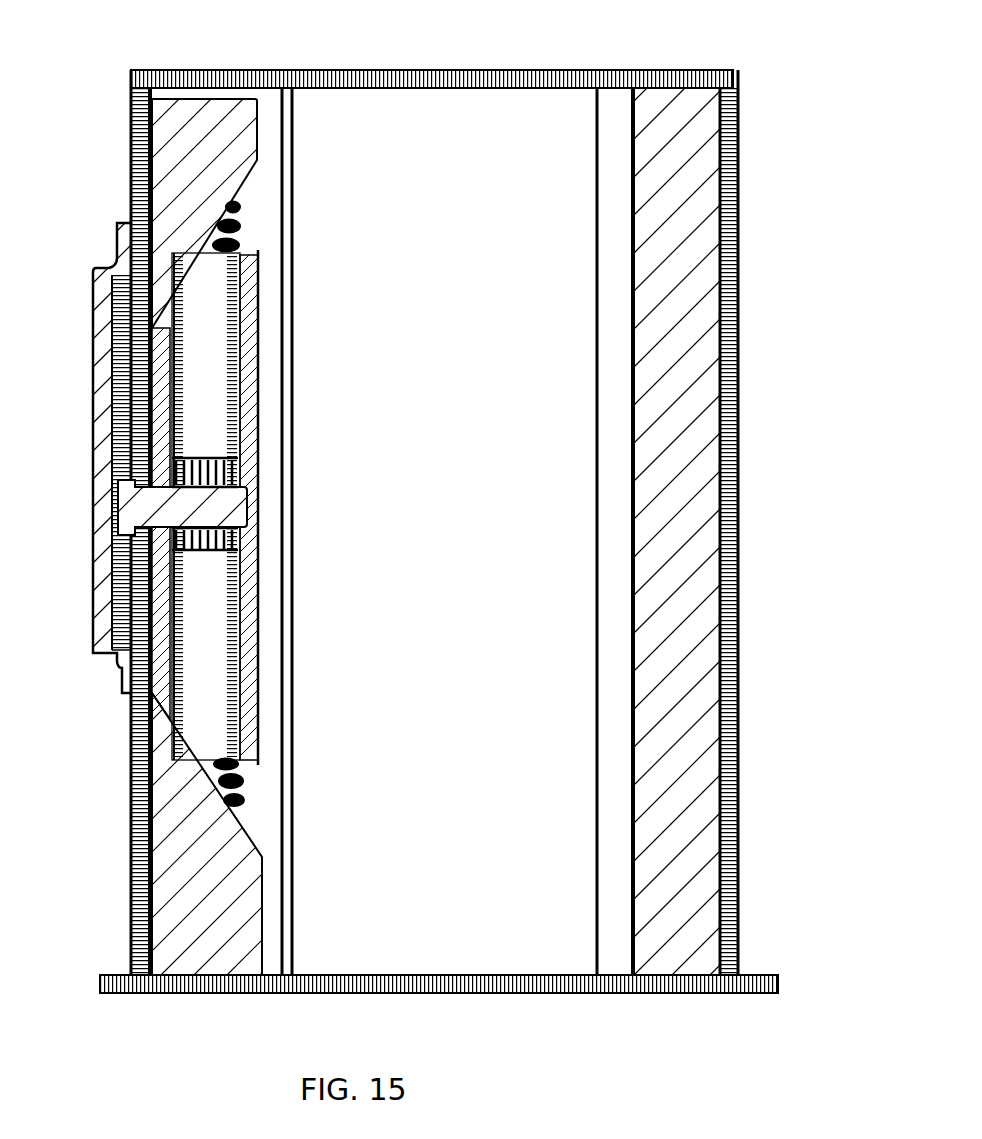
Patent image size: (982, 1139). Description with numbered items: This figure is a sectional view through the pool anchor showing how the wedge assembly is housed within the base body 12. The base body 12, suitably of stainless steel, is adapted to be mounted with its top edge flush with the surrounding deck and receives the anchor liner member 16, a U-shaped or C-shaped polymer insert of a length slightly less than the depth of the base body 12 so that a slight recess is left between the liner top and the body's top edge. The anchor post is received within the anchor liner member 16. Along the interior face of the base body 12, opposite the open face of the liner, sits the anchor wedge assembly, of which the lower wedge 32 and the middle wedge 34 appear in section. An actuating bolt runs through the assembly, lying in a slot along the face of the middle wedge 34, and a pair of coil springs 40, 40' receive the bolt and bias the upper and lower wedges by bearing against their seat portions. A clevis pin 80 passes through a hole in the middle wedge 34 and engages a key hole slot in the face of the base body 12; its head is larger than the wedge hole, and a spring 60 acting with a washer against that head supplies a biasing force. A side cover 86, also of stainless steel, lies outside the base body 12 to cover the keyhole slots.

The base body 12 is at (735, 882).
The anchor liner member 16 is at (682, 668).
The lower wedge 32 is at (207, 148).
The middle wedge 34 is at (162, 382).
The coil spring 40 is at (279, 175).
The coil spring 40' is at (165, 808).
The spring 60 is at (180, 553).
The clevis pin 80 is at (147, 503).
The side cover 86 is at (110, 262).